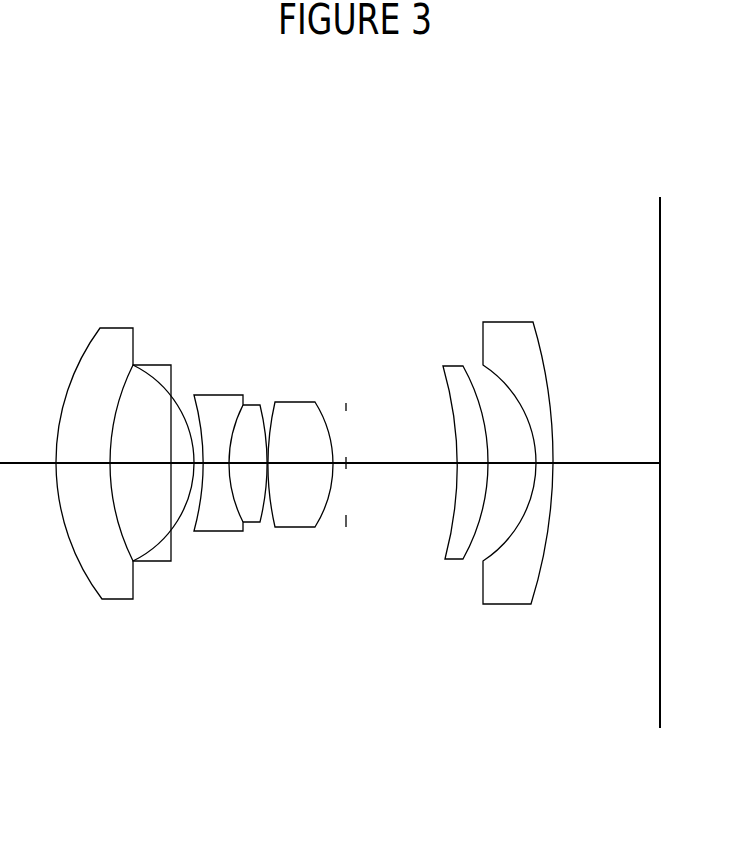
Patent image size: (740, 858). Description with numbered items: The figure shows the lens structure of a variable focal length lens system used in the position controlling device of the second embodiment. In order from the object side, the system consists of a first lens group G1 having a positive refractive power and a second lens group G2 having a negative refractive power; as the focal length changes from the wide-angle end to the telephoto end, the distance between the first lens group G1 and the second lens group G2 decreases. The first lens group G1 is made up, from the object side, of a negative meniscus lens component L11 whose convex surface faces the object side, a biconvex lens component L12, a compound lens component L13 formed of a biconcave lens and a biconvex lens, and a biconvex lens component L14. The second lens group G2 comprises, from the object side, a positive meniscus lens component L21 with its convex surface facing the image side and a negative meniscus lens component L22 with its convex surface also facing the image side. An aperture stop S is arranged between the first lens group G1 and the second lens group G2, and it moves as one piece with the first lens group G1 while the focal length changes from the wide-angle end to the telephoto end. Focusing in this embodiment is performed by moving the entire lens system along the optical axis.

The negative meniscus lens component L11 is at (118, 328).
The biconvex lens component L12 is at (152, 365).
The compound lens component L13 is at (222, 395).
The biconvex lens component L14 is at (293, 402).
The aperture stop S is at (346, 452).
The positive meniscus lens component L21 is at (452, 366).
The negative meniscus lens component L22 is at (507, 322).
The first lens group G1 is at (190, 463).
The second lens group G2 is at (480, 460).